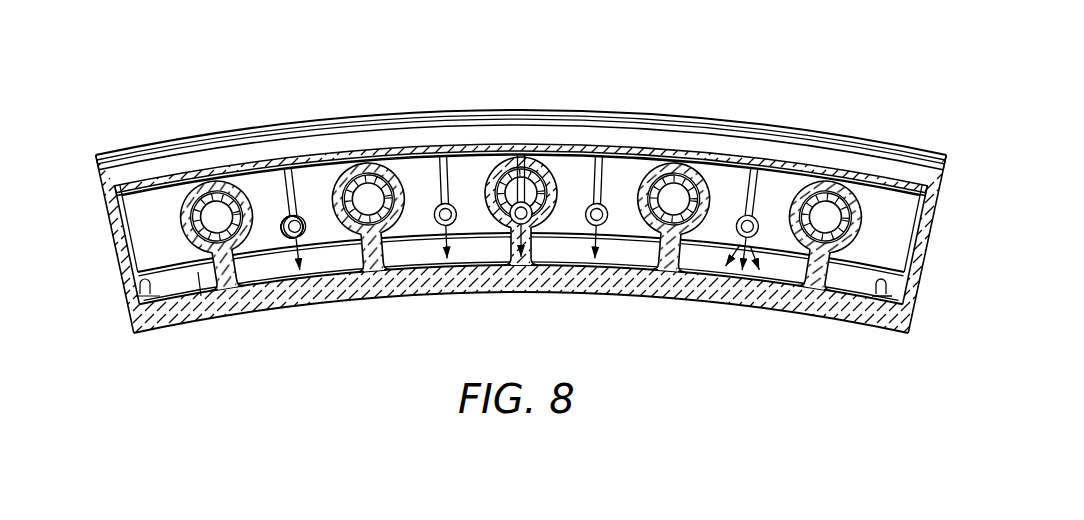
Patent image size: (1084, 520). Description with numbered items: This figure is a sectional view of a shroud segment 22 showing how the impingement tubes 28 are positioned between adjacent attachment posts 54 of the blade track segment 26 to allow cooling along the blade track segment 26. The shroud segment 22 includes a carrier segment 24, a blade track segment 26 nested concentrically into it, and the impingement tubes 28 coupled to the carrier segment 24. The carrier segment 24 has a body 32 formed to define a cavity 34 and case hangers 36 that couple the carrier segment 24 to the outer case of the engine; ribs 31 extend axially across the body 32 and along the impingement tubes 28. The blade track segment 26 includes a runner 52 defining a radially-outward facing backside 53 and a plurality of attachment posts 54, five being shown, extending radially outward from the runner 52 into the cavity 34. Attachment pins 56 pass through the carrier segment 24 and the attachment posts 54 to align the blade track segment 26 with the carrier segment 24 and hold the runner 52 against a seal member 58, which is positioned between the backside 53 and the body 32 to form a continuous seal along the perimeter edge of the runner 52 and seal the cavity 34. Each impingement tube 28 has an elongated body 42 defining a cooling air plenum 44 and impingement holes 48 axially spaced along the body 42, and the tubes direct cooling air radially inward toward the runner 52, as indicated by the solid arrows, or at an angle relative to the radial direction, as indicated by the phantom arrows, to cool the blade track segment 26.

The shroud segment 22 is at (885, 80).
The carrier segment 24 is at (693, 123).
The blade track segment 26 is at (305, 312).
The impingement tube 28 is at (277, 205).
The rib 31 is at (302, 182).
The body 32 is at (103, 211).
The cavity 34 is at (483, 187).
The case hanger 36 is at (760, 128).
The elongated body 42 is at (310, 205).
The cooling air plenum 44 is at (282, 237).
The impingement hole 48 is at (312, 233).
The runner 52 is at (430, 285).
The backside 53 is at (562, 268).
The attachment post 54 is at (222, 290).
The attachment pin 56 is at (212, 178).
The seal member 58 is at (126, 298).